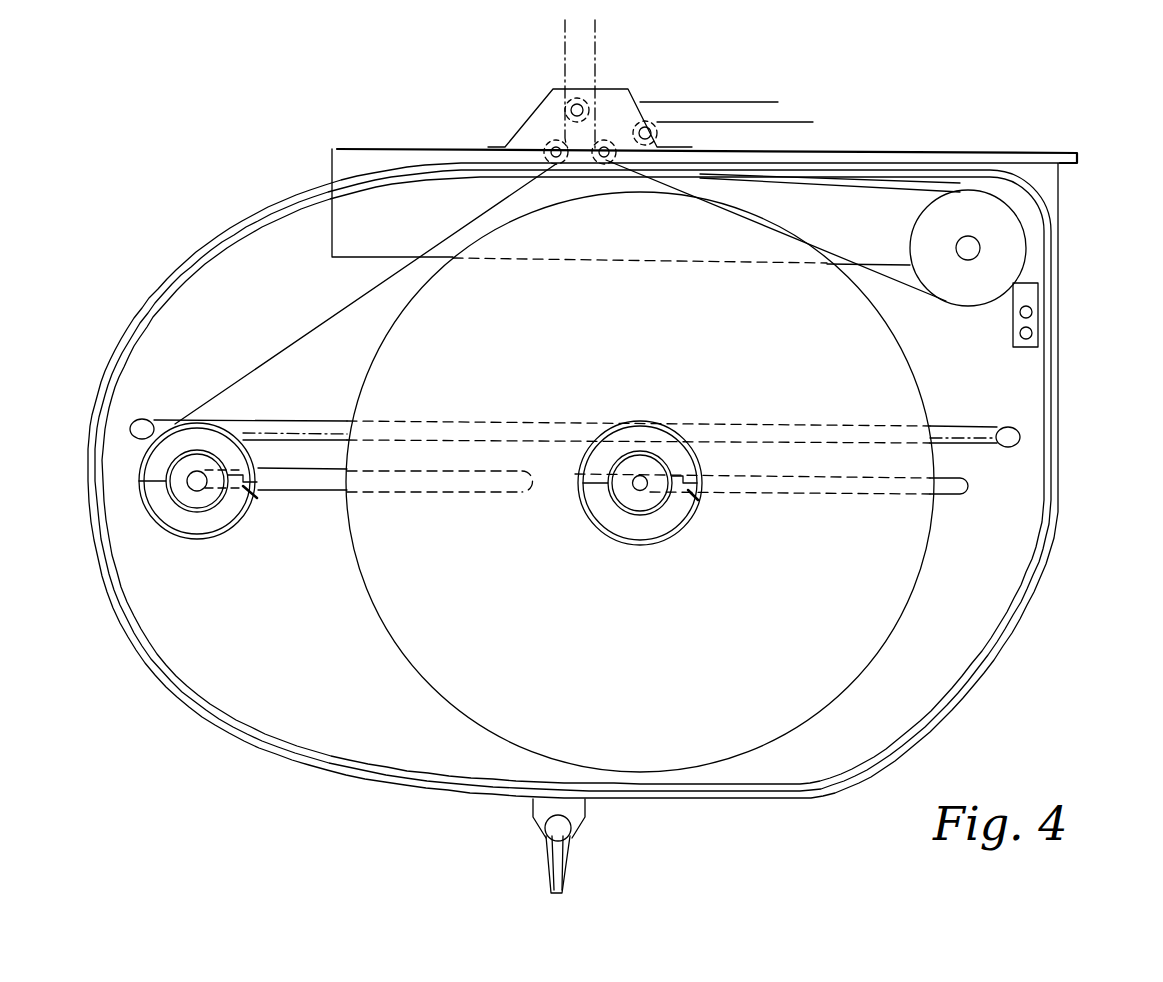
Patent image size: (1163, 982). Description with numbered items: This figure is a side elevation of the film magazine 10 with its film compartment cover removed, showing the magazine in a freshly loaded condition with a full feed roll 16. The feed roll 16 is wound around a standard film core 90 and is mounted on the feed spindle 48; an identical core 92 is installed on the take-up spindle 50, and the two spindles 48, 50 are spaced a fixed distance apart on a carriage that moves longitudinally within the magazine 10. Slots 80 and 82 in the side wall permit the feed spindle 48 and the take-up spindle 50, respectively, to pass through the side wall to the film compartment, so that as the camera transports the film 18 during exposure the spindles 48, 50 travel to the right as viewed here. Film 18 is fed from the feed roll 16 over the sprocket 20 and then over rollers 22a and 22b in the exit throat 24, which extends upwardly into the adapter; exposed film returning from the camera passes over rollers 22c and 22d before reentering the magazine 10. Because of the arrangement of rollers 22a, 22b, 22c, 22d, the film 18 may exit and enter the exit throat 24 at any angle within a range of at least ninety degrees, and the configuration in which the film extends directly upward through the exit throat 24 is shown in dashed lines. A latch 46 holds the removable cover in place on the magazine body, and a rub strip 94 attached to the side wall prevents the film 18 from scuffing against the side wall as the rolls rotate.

The film magazine 10 is at (1060, 360).
The film feed roll 16 is at (640, 482).
The film 18 is at (918, 297).
The sprocket 20 is at (1022, 257).
The roller 22a is at (603, 165).
The roller 22b is at (657, 133).
The roller 22c is at (588, 103).
The roller 22d is at (545, 148).
The exit throat 24 is at (535, 125).
The latch 46 is at (558, 848).
The feed spindle 48 is at (635, 488).
The take-up spindle 50 is at (197, 485).
The slot 80 is at (947, 490).
The slot 82 is at (313, 488).
The film core 90 is at (668, 537).
The core 92 is at (233, 528).
The rub strip 94 is at (990, 442).